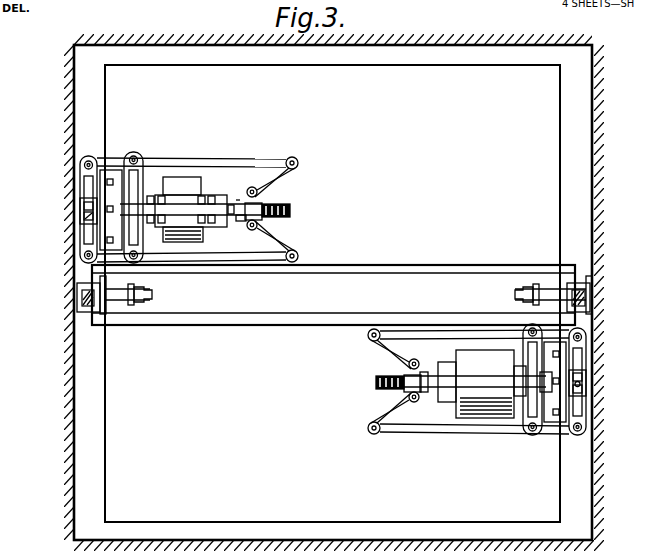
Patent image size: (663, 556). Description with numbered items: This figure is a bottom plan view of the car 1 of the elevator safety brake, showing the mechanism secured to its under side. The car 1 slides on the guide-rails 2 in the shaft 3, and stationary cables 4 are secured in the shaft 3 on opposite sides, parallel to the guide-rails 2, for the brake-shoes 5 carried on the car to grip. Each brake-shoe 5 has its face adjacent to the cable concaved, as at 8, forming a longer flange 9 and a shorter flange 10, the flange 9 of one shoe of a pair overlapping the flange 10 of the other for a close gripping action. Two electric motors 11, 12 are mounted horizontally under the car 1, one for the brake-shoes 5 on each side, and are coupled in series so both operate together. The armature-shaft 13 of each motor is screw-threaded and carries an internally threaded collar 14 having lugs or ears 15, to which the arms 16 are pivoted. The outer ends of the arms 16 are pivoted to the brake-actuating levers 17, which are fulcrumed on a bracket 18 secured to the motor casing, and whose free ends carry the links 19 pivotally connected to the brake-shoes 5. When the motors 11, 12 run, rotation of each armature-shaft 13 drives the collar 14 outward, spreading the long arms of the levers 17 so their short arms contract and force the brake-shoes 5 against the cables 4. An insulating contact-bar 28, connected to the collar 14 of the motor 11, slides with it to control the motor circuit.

The car 1 is at (332, 293).
The guide-rails 2 is at (80, 298).
The shaft 3 is at (580, 232).
The cables 4 is at (82, 210).
The brake-shoes 5 is at (82, 218).
The concaved surface 8 is at (584, 392).
The flange 9 is at (584, 386).
The flange 10 is at (562, 422).
The electric motor 11 is at (191, 209).
The electric motor 12 is at (478, 384).
The armature-shaft 13 is at (290, 207).
The collar 14 is at (409, 397).
The lugs or ears 15 is at (258, 217).
The arms 16 is at (268, 176).
The brake-actuating levers 17 is at (228, 162).
The bracket 18 is at (140, 161).
The links 19 is at (82, 170).
The contact-bar 28 is at (237, 208).